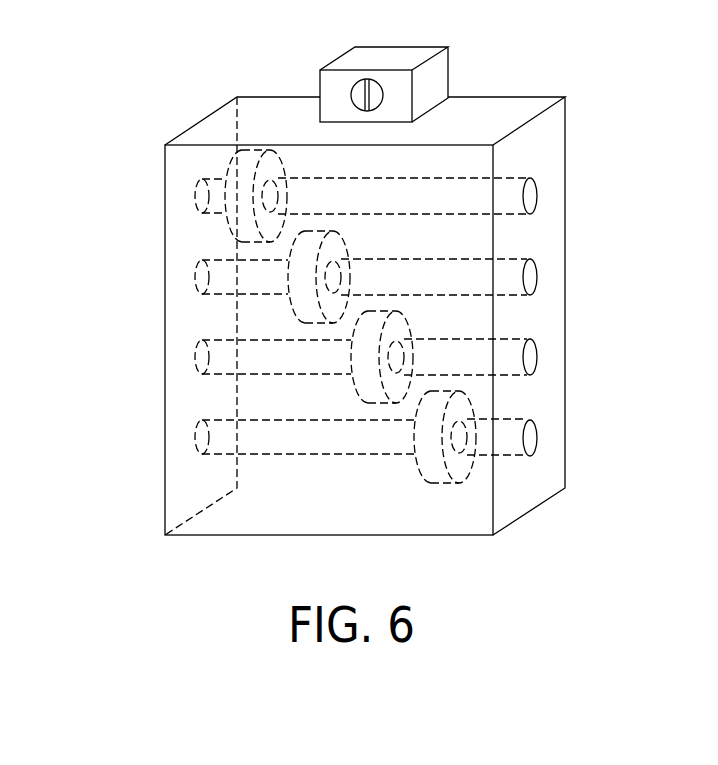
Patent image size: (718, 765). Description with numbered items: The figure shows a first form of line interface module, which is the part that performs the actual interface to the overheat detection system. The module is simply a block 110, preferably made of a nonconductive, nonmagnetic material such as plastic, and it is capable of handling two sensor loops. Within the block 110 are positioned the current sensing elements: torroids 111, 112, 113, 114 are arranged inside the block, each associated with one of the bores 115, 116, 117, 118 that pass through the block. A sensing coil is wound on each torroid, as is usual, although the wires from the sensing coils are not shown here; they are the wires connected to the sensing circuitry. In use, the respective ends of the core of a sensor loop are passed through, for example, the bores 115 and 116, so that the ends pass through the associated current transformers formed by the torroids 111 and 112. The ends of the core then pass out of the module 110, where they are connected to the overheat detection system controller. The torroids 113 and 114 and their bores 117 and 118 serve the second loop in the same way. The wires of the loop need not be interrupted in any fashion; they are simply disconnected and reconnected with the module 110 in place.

The block 110 is at (553, 135).
The torroid 111 is at (233, 236).
The torroid 112 is at (296, 318).
The torroid 113 is at (360, 398).
The torroid 114 is at (422, 480).
The bore 115 is at (530, 196).
The bore 116 is at (530, 277).
The bore 117 is at (530, 357).
The bore 118 is at (530, 438).